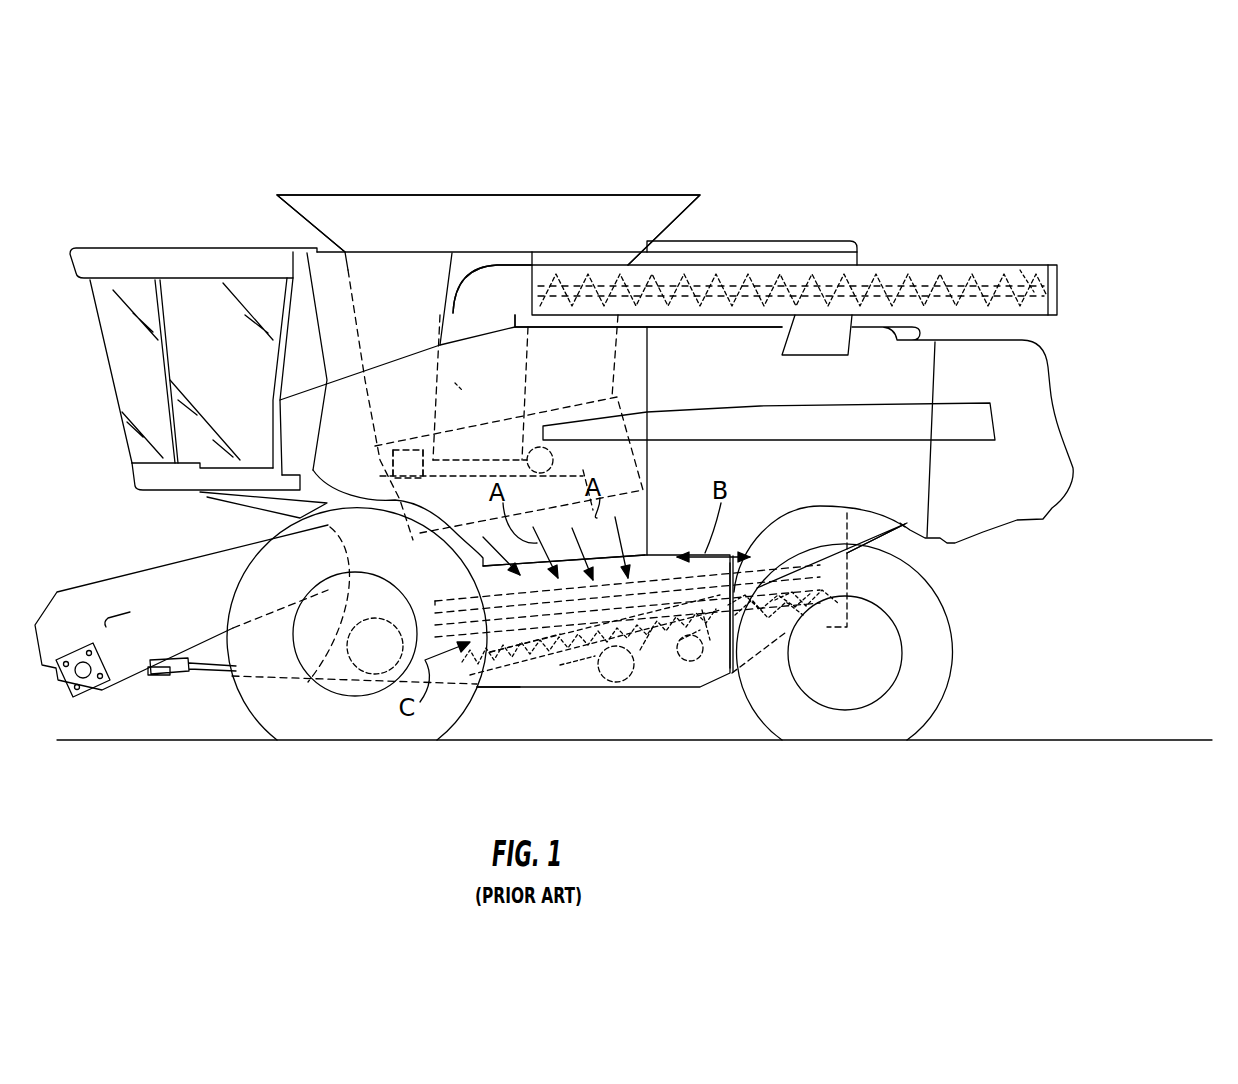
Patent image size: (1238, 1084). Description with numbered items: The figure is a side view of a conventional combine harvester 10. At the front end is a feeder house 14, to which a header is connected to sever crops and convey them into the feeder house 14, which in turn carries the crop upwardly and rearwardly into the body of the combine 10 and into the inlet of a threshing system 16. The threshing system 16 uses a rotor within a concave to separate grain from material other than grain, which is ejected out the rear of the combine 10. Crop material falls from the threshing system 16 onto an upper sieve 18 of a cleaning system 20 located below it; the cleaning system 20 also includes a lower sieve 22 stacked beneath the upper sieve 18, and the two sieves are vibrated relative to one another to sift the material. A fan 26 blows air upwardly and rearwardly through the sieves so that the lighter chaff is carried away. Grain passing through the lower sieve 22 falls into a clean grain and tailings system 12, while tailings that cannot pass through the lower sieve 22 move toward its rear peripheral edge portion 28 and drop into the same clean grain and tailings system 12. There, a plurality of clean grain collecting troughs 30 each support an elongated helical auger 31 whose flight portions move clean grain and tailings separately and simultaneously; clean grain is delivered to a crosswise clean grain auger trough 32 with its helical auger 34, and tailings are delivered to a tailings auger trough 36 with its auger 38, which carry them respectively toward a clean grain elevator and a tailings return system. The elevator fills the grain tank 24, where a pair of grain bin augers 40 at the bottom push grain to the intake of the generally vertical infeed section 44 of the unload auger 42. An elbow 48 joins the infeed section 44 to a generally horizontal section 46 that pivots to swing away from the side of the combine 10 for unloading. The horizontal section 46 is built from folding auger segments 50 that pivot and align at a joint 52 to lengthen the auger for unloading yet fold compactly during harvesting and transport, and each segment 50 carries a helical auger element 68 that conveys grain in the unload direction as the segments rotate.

The combine harvester 10 is at (1036, 178).
The clean grain and tailings system 12 is at (792, 609).
The feeder house 14 is at (103, 585).
The threshing system 16 is at (613, 397).
The upper sieve 18 is at (658, 577).
The cleaning system 20 is at (770, 552).
The lower sieve 22 is at (430, 627).
The grain tank 24 is at (642, 193).
The fan 26 is at (360, 663).
The rear peripheral edge portion 28 is at (897, 563).
The clean grain collecting troughs 30 is at (520, 672).
The helical auger 31 is at (525, 635).
The clean grain auger trough 32 is at (585, 665).
The helical auger 34 is at (603, 687).
The tailings auger trough 36 is at (674, 651).
The auger 38 is at (695, 655).
The grain bin augers 40 is at (390, 447).
The unload auger 42 is at (792, 250).
The infeed section 44 is at (458, 385).
The horizontal section 46 is at (722, 316).
The elbow 48 is at (473, 287).
The folding auger segments 50 is at (733, 264).
The joint 52 is at (1058, 286).
The helical auger element 68 is at (1027, 263).